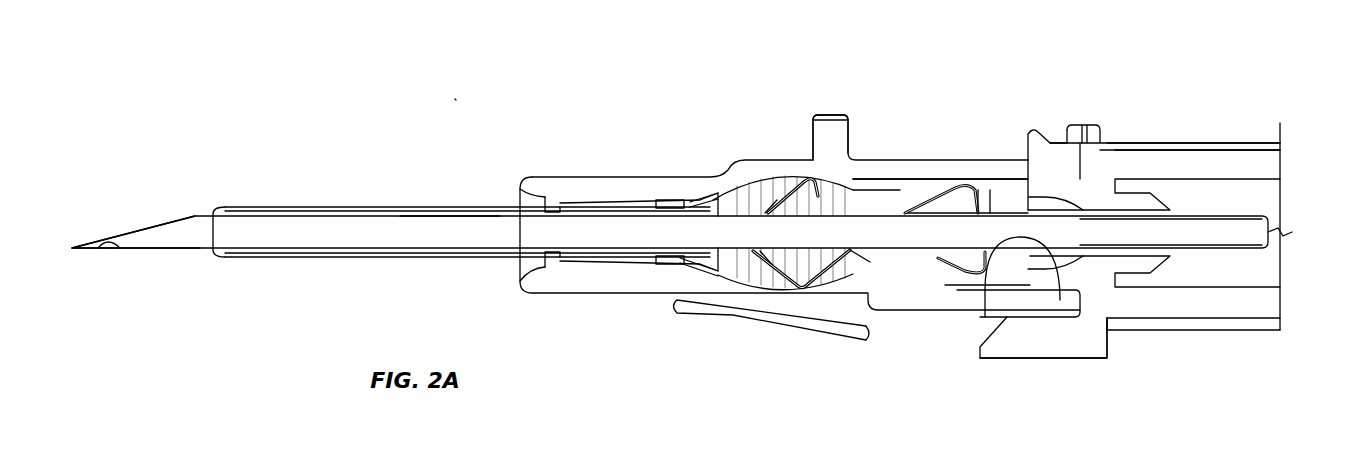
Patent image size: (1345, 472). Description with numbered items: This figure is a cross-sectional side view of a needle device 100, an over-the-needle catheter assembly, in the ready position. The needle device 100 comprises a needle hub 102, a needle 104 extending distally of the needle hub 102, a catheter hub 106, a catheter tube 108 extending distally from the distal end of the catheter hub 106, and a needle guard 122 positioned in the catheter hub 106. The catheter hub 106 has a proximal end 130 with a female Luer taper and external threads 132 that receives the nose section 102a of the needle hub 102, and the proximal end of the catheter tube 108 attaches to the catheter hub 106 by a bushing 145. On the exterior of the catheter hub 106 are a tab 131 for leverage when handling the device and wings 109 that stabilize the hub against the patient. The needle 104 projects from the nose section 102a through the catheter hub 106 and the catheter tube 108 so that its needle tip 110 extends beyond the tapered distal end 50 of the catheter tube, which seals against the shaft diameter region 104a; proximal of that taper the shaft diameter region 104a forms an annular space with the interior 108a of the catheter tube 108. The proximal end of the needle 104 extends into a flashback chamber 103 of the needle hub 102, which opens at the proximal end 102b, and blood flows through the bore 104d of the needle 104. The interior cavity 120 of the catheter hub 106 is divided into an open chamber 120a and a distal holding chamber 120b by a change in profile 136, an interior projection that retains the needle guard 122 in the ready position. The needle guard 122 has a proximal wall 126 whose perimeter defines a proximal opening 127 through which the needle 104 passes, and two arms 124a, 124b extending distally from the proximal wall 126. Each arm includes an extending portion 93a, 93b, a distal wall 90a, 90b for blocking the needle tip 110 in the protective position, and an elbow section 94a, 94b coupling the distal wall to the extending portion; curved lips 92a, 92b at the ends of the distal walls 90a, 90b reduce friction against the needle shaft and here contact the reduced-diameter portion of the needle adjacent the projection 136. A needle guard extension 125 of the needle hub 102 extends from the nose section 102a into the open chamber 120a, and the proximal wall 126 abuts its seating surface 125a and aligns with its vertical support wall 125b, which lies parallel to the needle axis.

The needle device 100 is at (452, 95).
The distal end of catheter tube 50 is at (200, 260).
The needle 104 is at (200, 212).
The shaft diameter region 104a is at (445, 232).
The bore of needle 104d is at (1235, 240).
The needle tip 110 is at (135, 243).
The catheter tube 108 is at (345, 205).
The interior of catheter tube 108a is at (485, 226).
The catheter hub 106 is at (578, 176).
The bushing 145 is at (700, 195).
The tab 131 is at (830, 113).
The wings 109 is at (710, 318).
The curved lip 92a is at (715, 198).
The curved lip 92b is at (695, 293).
The holding chamber 120b is at (765, 188).
The open chamber 120a is at (910, 186).
The interior cavity 120 is at (972, 182).
The distal wall 90a is at (785, 198).
The distal wall 90b is at (775, 282).
The elbow section 94a is at (818, 178).
The elbow section 94b is at (795, 277).
The extending portion 93a is at (950, 285).
The extending portion 93b is at (840, 292).
The change in profile 136 is at (890, 200).
The arm 124b is at (936, 183).
The arm 124a is at (950, 272).
The needle guard 122 is at (992, 183).
The needle guard extension 125 is at (1015, 296).
The seating surface 125a is at (1000, 300).
The vertical support wall 125b is at (952, 275).
The proximal opening 127 is at (1060, 300).
The proximal wall 126 is at (1040, 160).
The external threads 132 is at (1082, 122).
The needle hub 102 is at (1082, 338).
The nose section 102a is at (1058, 188).
The proximal end of needle hub 102b is at (1282, 160).
The proximal end of catheter hub 130 is at (1092, 140).
The flashback chamber 103 is at (1203, 190).